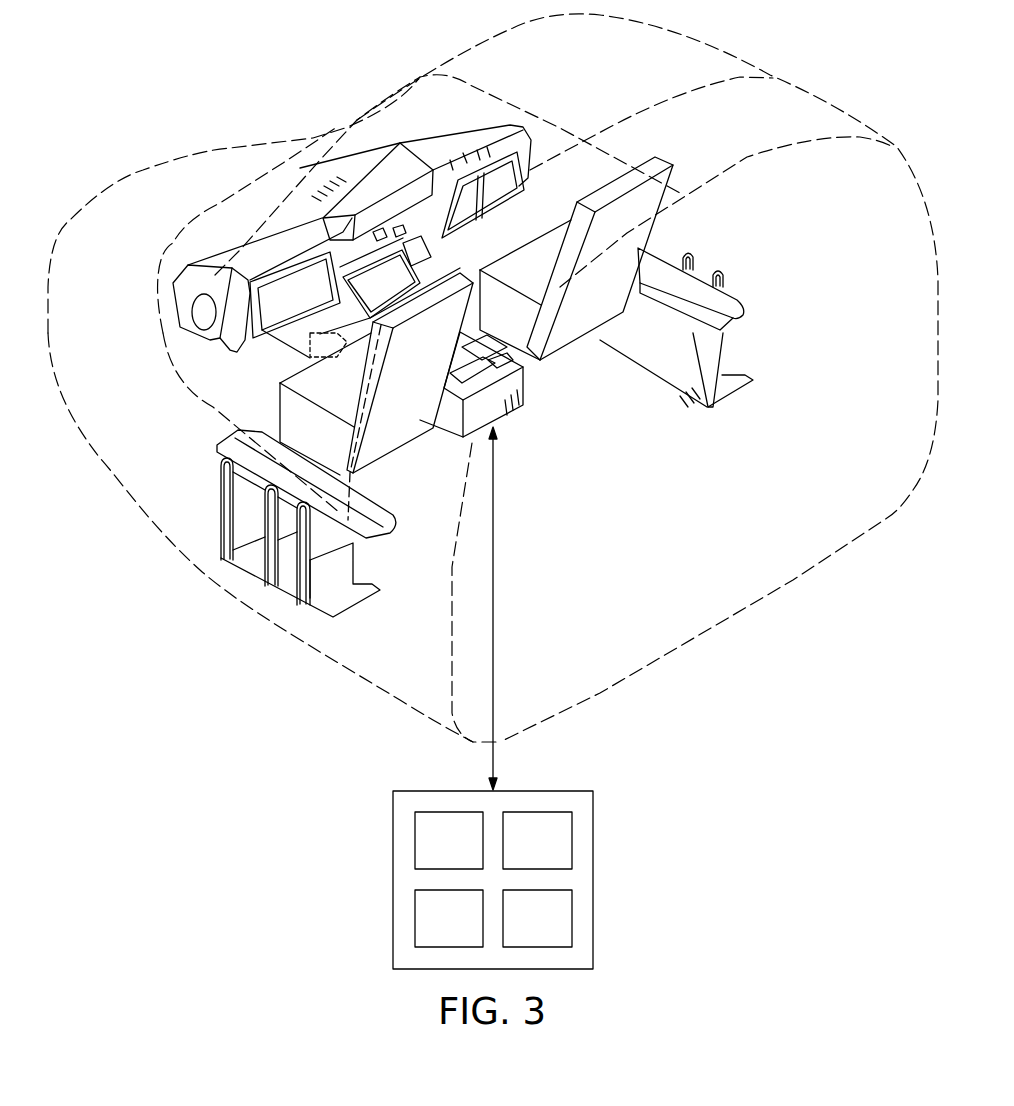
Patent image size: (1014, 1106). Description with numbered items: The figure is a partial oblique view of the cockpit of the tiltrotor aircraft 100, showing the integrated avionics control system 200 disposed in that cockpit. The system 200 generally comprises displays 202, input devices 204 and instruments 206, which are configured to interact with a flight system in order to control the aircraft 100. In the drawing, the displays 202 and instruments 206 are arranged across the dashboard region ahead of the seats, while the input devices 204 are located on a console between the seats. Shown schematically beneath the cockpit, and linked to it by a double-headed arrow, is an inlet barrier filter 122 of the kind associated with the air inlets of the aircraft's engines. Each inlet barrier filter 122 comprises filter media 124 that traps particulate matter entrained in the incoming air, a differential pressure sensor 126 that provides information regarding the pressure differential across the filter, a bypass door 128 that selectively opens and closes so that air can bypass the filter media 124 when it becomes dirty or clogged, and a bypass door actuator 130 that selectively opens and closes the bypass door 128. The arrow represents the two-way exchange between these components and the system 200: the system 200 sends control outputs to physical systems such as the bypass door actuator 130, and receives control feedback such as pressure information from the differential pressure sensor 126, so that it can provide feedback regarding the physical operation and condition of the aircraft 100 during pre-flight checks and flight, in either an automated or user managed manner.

The tiltrotor aircraft 100 is at (193, 68).
The integrated avionics control system 200 is at (463, 353).
The displays 202 is at (352, 250).
The input devices 204 is at (450, 368).
The instruments 206 is at (420, 234).
The inlet barrier filter 122 is at (450, 880).
The filter media 124 is at (428, 853).
The differential pressure sensor 126 is at (516, 853).
The bypass door 128 is at (428, 931).
The bypass door actuator 130 is at (516, 931).